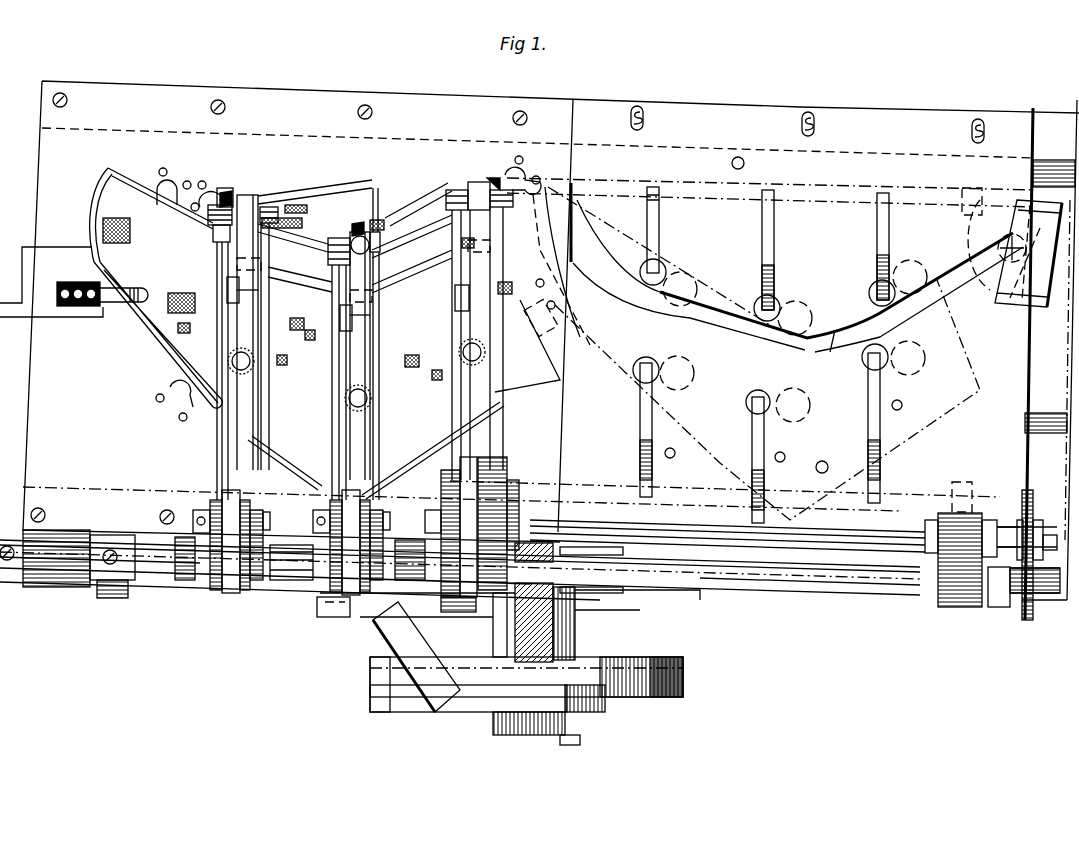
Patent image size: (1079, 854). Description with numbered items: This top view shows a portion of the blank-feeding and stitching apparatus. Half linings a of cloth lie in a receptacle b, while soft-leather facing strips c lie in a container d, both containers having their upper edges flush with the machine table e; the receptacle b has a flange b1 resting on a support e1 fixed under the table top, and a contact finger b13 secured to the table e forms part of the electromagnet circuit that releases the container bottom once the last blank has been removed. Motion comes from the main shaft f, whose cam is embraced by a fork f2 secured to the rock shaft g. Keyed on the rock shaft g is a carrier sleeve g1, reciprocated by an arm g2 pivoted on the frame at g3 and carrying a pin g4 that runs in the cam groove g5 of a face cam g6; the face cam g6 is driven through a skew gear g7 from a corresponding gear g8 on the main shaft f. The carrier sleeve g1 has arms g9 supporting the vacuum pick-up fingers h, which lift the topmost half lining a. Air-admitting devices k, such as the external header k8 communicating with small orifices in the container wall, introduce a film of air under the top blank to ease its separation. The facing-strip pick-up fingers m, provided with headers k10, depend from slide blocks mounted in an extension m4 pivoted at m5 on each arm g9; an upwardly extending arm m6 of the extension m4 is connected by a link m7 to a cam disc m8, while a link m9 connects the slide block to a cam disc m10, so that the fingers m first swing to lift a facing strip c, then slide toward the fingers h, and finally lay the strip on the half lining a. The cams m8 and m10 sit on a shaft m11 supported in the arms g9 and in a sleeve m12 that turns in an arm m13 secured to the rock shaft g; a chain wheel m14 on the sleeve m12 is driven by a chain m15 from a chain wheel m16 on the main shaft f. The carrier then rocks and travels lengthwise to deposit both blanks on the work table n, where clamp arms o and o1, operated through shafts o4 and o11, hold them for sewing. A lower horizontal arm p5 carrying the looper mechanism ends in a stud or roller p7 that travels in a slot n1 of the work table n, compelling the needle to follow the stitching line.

The half lining a is at (958, 425).
The machine table e is at (142, 278).
The support e1 is at (533, 300).
The receptacle b is at (152, 394).
The flange b1 is at (177, 400).
The contact finger b13 is at (131, 290).
The lever rod k is at (262, 378).
The external header k8 is at (160, 363).
The header k10 is at (238, 200).
The vacuum tube h is at (230, 361).
The facing strip c is at (300, 208).
The container d is at (380, 222).
The pick-up finger m is at (245, 195).
The extension m4 is at (237, 264).
The pivot m5 is at (227, 300).
The upwardly extending arm m6 is at (218, 190).
The link m7 is at (268, 287).
The cam disc m8 is at (267, 490).
The link m9 is at (225, 355).
The cam disc m10 is at (200, 508).
The shaft m11 is at (590, 520).
The sleeve m12 is at (960, 515).
The arm m13 is at (962, 607).
The chain wheel m14 is at (1030, 520).
The chain m15 is at (1027, 560).
The chain wheel m16 is at (1045, 600).
The main shaft f is at (1045, 615).
The fork f2 is at (110, 598).
The rock shaft g is at (158, 585).
The carrier sleeve g1 is at (285, 592).
The arm g2 is at (372, 622).
The pivot g3 is at (510, 735).
The pin g4 is at (410, 712).
The cam groove g5 is at (590, 672).
The face cam g6 is at (640, 700).
The skew gear g7 is at (650, 600).
The gear g8 is at (575, 628).
The arm g9 is at (222, 592).
The work table n is at (962, 312).
The slot n1 is at (832, 352).
The clamp arm o is at (891, 405).
The clamp arm o1 is at (660, 235).
The shaft o4 is at (820, 495).
The shaft o11 is at (738, 185).
The lower horizontal arm p5 is at (972, 262).
The stud or roller p7 is at (1028, 253).